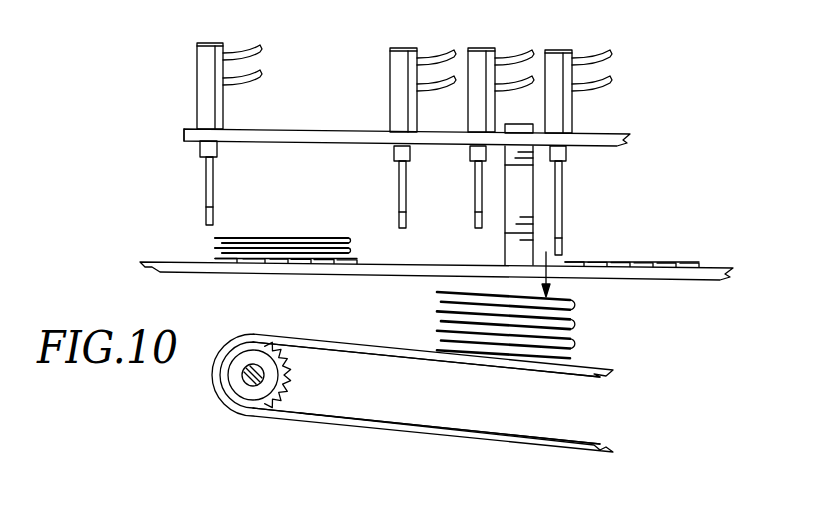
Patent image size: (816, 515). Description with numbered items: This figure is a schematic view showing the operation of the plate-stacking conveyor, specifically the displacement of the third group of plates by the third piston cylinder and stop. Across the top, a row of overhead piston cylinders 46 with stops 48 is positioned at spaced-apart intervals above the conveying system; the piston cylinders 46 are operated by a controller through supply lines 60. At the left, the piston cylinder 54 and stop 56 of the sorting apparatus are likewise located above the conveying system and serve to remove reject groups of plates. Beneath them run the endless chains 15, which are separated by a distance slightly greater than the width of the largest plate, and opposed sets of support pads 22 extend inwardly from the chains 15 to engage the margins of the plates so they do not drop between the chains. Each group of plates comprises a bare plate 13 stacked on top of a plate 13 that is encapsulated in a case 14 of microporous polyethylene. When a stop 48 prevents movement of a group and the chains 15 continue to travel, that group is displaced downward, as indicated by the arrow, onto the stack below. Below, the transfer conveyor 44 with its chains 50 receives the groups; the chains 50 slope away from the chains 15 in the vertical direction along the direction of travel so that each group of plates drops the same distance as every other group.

The plate 13 is at (215, 253).
The case 14 is at (355, 253).
The endless chains 15 is at (485, 265).
The support pads 22 is at (308, 267).
The transfer conveyor 44 is at (340, 431).
The piston cylinders 46 is at (490, 48).
The stops 48 is at (475, 208).
The chains 50 is at (440, 428).
The piston cylinder 54 is at (195, 106).
The stop 56 is at (205, 202).
The supply lines 60 is at (578, 92).